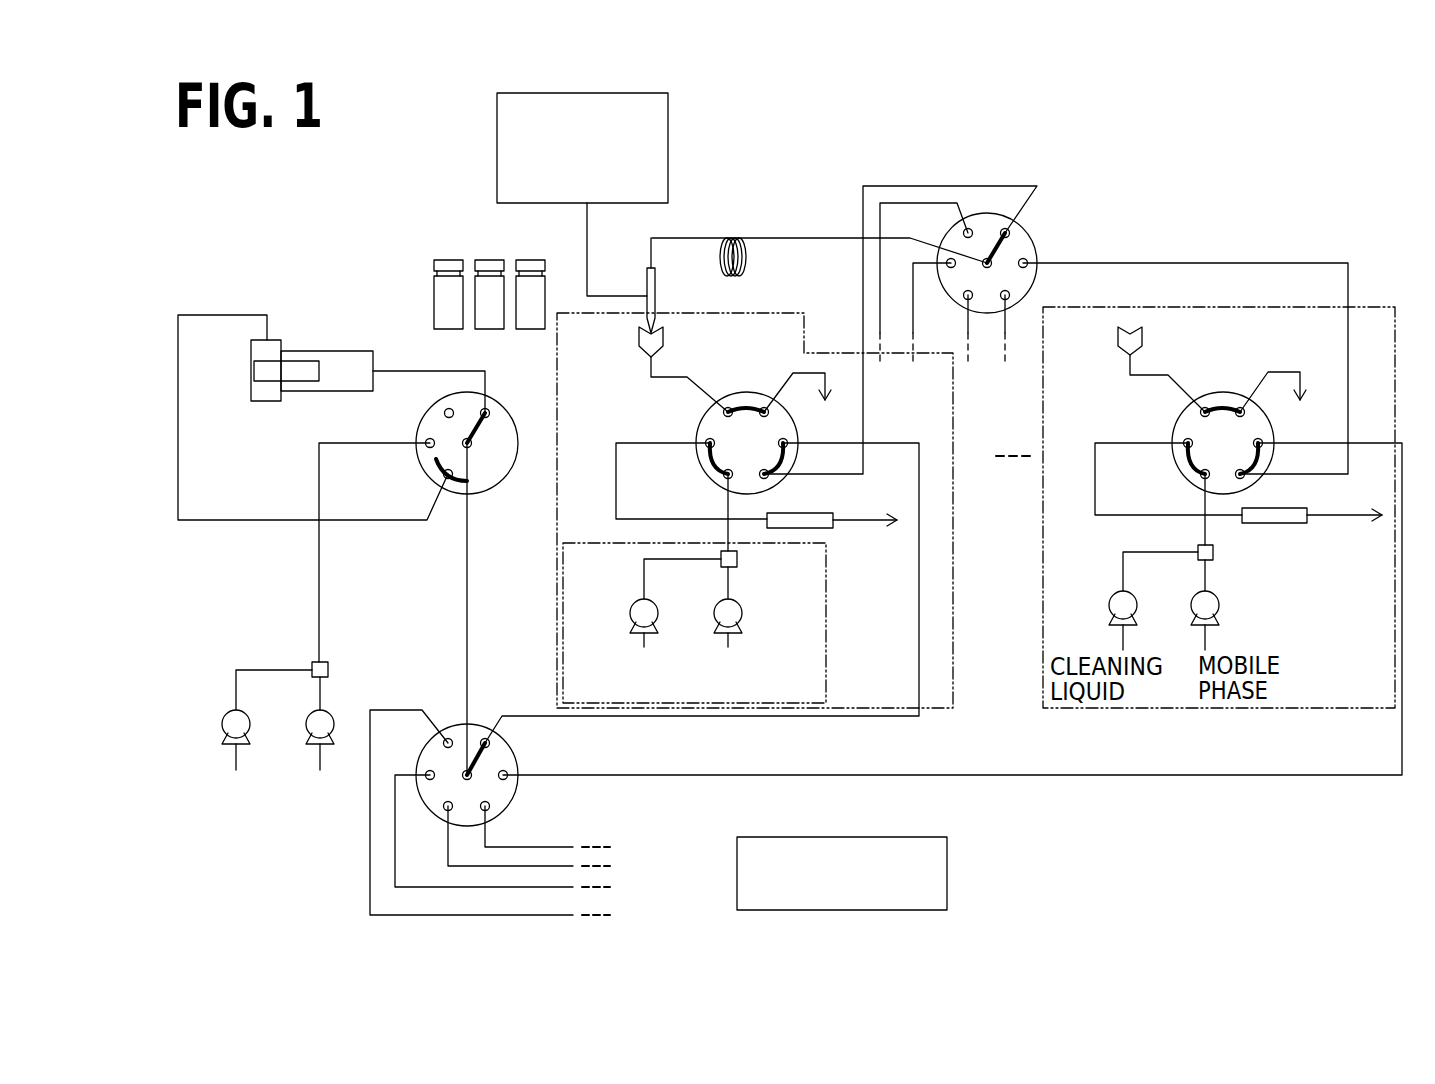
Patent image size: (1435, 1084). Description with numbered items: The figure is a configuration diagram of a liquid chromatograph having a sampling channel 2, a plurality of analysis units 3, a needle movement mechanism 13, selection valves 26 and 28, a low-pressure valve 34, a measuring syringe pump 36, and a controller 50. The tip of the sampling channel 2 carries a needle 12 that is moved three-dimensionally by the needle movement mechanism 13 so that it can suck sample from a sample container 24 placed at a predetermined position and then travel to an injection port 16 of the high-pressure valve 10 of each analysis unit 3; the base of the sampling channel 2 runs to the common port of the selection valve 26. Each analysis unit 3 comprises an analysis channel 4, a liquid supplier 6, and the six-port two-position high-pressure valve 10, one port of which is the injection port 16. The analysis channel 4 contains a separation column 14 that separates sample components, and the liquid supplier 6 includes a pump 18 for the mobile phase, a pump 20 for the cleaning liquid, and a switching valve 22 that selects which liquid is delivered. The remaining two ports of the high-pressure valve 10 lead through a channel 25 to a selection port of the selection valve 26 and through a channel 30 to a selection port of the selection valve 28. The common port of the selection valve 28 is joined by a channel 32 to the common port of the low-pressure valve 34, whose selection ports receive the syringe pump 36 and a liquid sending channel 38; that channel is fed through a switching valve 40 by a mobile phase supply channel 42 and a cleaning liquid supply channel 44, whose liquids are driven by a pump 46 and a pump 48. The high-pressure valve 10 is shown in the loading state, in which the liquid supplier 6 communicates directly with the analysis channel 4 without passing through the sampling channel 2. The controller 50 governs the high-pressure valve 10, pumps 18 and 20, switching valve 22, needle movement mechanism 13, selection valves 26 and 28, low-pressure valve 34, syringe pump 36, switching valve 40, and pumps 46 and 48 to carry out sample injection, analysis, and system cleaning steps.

The sampling channel 2 is at (780, 237).
The analysis unit 3 is at (955, 540).
The analysis channel 4 is at (616, 482).
The liquid supplier 6 is at (826, 603).
The high-pressure valve 10 is at (747, 393).
The needle 12 is at (655, 297).
The needle movement mechanism 13 is at (670, 120).
The separation column 14 is at (827, 529).
The injection port 16 is at (648, 343).
The pump 18 is at (730, 615).
The pump 20 is at (645, 617).
The switching valve 22 is at (737, 560).
The sample container 24 is at (433, 295).
The channel 25 is at (865, 417).
The selection valve 26 is at (1029, 233).
The selection valve 28 is at (513, 798).
The channel 30 is at (812, 717).
The channel 32 is at (487, 600).
The low-pressure valve 34 is at (503, 406).
The syringe pump 36 is at (327, 349).
The liquid sending channel 38 is at (327, 598).
The switching valve 40 is at (328, 662).
The mobile phase supply channel 42 is at (322, 690).
The cleaning liquid supply channel 44 is at (258, 667).
The pump 46 is at (323, 722).
The pump 48 is at (233, 723).
The controller 50 is at (947, 855).